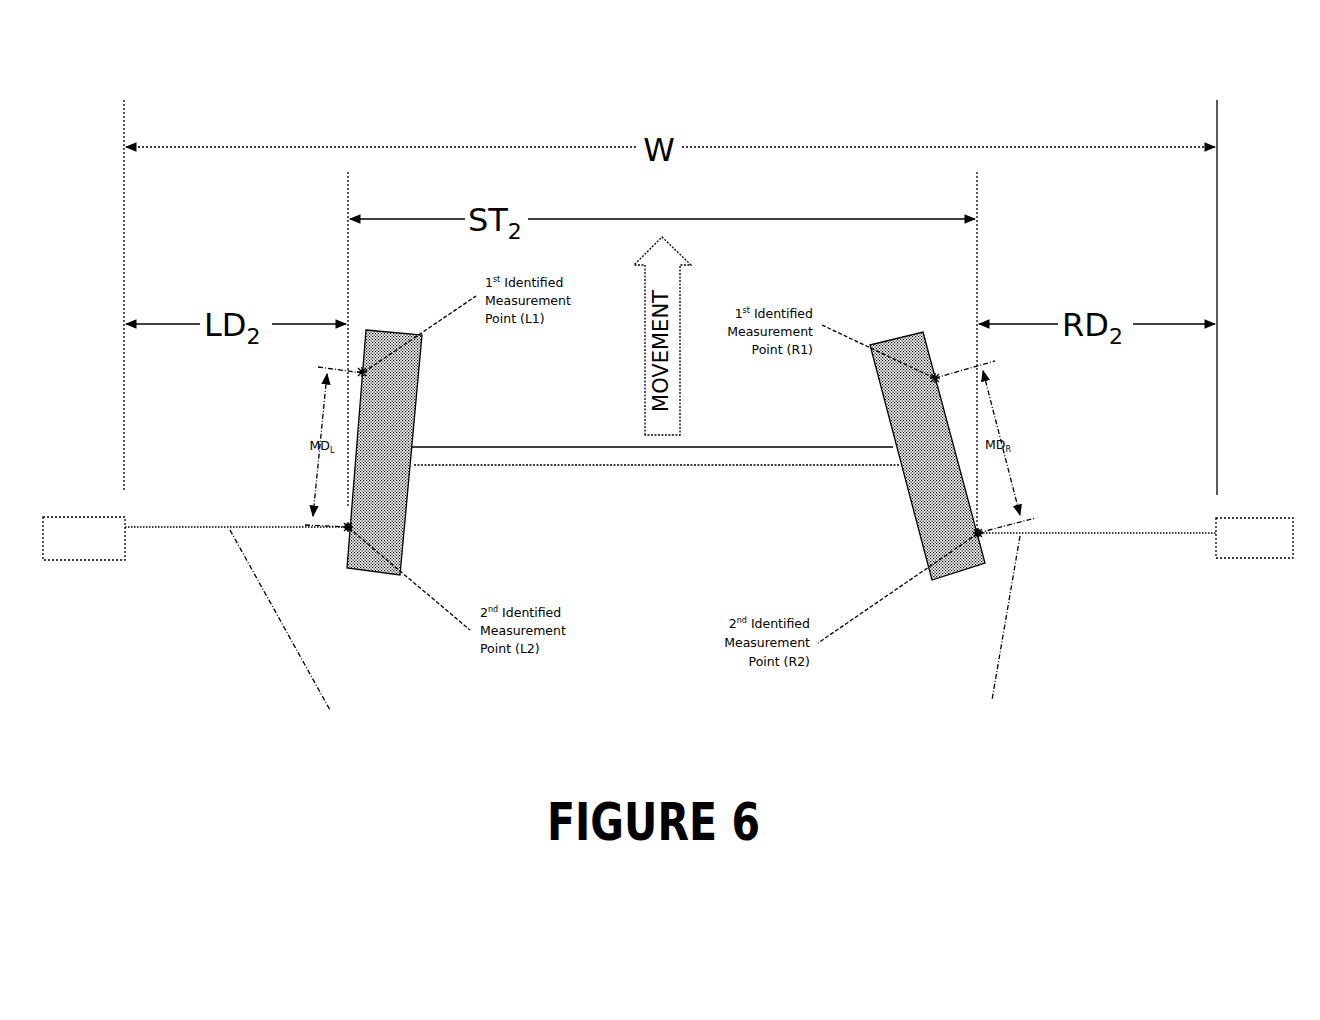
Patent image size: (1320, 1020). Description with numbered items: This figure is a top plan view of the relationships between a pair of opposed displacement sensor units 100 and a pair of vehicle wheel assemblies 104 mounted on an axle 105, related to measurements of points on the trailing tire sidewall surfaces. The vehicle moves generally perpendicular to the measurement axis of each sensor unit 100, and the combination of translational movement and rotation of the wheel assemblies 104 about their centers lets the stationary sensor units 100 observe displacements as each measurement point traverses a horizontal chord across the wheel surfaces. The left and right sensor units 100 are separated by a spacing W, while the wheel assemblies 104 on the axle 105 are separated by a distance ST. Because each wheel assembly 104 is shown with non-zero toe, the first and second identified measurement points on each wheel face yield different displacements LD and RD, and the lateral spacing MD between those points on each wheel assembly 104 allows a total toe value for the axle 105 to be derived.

The Sensor Unit 100 is at (80, 562).
The wheel assembly 104 is at (405, 527).
The axle 105 is at (462, 453).